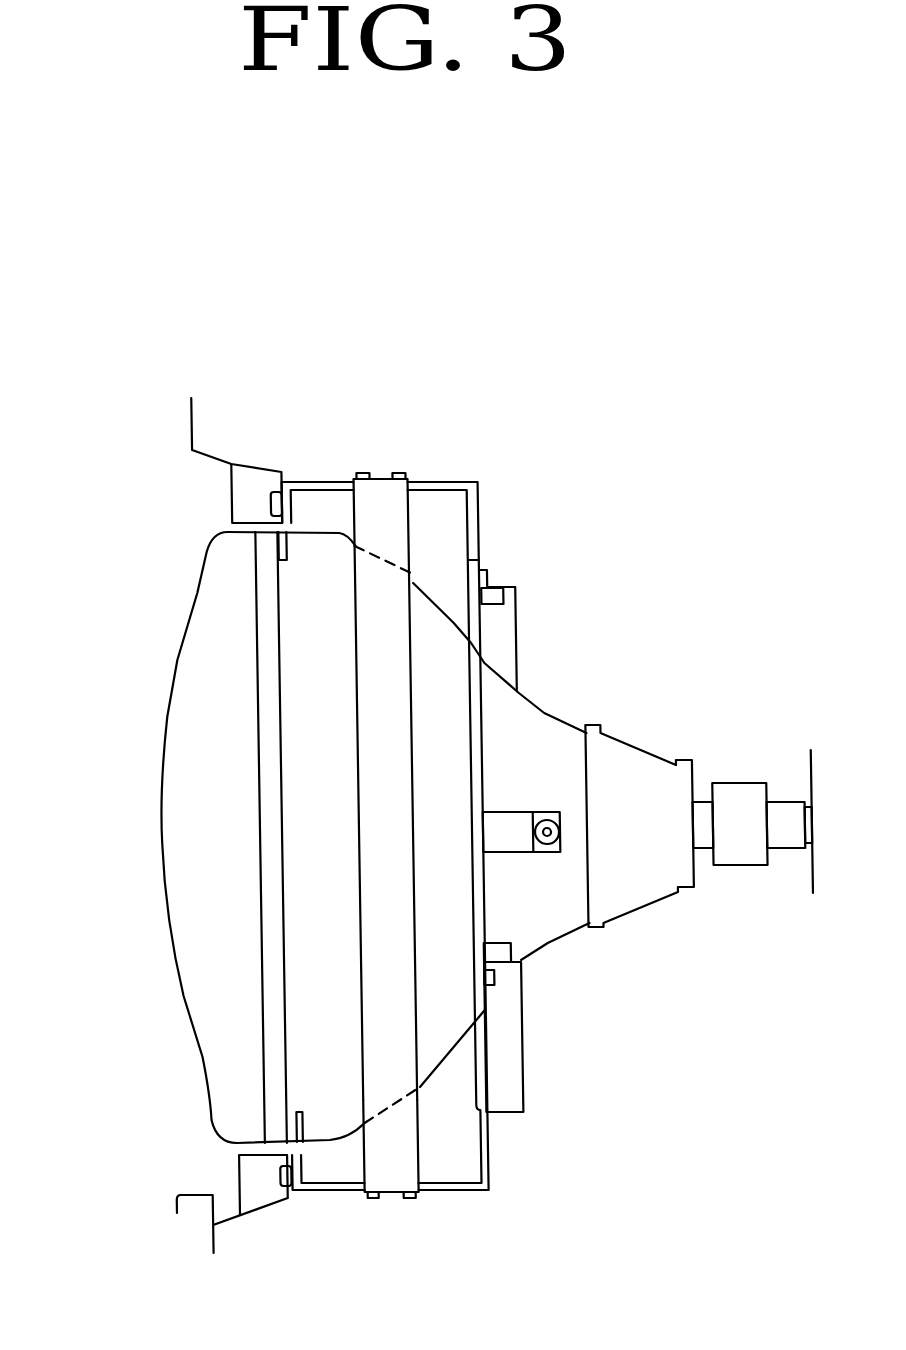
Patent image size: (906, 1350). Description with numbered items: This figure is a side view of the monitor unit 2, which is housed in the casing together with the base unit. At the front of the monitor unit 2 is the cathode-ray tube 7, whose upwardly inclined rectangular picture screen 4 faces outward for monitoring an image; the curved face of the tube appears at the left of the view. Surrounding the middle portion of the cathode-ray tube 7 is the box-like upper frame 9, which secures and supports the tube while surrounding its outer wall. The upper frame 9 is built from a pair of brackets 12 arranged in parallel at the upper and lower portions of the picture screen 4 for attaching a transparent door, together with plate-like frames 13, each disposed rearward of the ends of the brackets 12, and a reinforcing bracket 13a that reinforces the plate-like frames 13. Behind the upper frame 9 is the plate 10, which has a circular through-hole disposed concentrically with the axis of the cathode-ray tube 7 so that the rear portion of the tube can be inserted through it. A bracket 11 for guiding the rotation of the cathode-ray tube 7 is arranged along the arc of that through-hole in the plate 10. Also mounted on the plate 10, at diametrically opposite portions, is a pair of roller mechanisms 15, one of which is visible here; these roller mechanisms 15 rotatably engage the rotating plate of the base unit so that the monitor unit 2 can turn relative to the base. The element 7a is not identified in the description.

The monitor unit 2 is at (527, 505).
The picture screen 4 is at (170, 877).
The cathode-ray tube 7 is at (195, 1052).
The lens flange 7a is at (269, 710).
The box-like upper frame 9 is at (496, 1150).
The plate 10 is at (479, 900).
The bracket 11 is at (504, 1055).
The bracket 12 is at (245, 493).
The plate-like frame 13 is at (318, 490).
The reinforcing bracket 13a is at (388, 1147).
The roller mechanism 15 is at (551, 813).